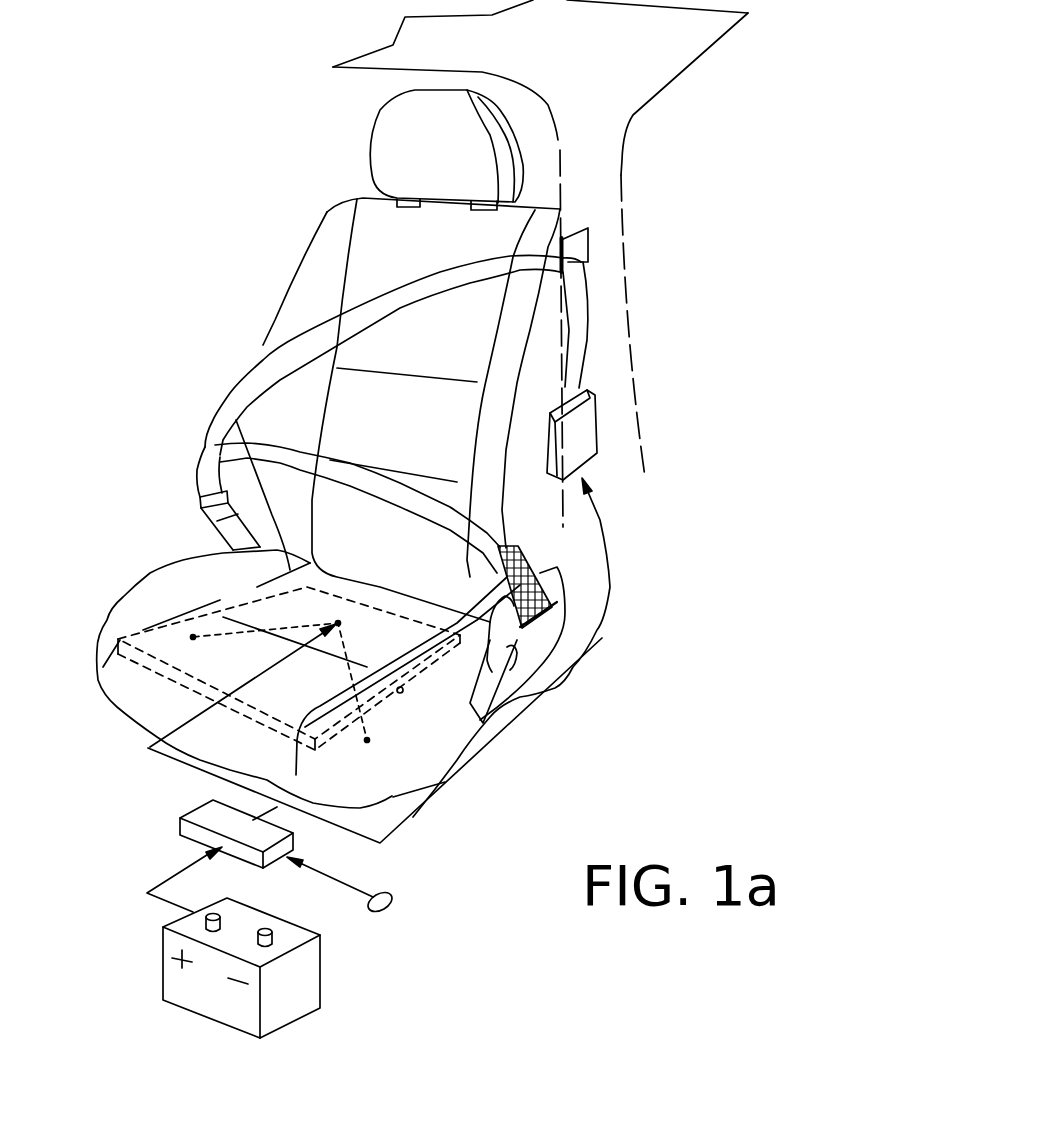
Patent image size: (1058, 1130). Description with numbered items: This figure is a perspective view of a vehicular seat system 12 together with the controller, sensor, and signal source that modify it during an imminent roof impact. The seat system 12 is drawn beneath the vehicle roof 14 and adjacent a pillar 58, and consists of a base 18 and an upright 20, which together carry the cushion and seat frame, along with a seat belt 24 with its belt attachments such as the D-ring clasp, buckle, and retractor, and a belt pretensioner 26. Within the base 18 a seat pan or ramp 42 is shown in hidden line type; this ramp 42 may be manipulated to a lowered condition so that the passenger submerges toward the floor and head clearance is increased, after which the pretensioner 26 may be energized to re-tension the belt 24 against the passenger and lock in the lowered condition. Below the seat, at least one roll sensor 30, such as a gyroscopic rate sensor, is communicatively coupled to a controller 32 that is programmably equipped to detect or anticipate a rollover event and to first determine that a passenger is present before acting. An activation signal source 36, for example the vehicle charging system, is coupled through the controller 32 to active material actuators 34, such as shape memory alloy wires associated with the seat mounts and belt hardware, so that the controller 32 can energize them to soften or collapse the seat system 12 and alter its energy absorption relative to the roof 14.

The seat system 12 is at (272, 222).
The roof 14 is at (522, 62).
The base 18 is at (343, 788).
The upright 20 is at (342, 431).
The seat belt 24 is at (215, 408).
The belt pretensioner 26 is at (587, 430).
The roll sensor 30 is at (393, 907).
The controller 32 is at (185, 830).
The active material actuators 34 is at (317, 741).
The activation signal source 36 is at (187, 998).
The seat pan or ramp 42 is at (145, 632).
The pillars 58 is at (628, 298).